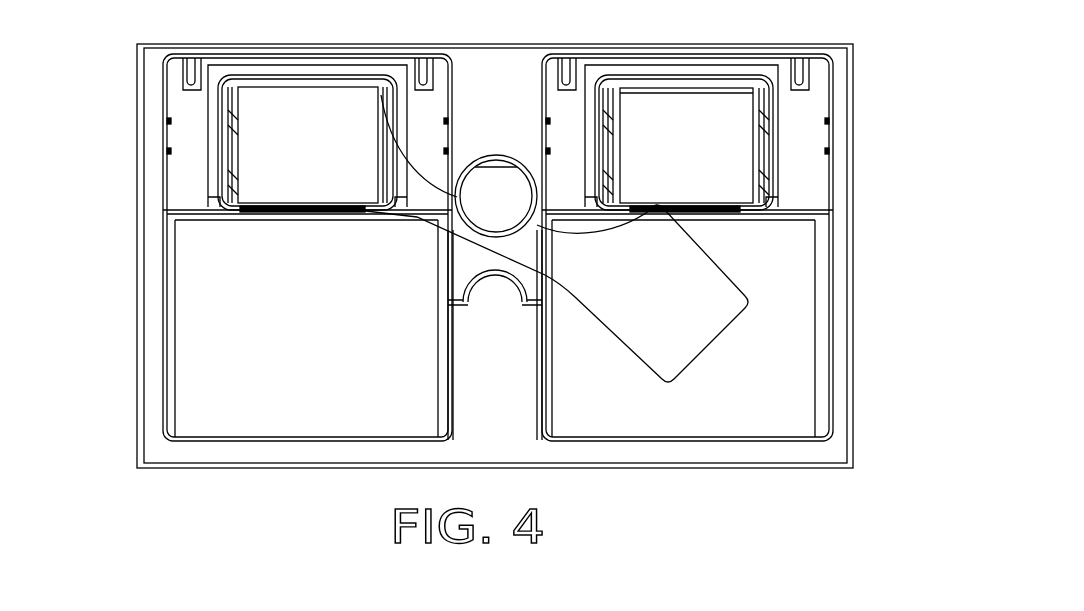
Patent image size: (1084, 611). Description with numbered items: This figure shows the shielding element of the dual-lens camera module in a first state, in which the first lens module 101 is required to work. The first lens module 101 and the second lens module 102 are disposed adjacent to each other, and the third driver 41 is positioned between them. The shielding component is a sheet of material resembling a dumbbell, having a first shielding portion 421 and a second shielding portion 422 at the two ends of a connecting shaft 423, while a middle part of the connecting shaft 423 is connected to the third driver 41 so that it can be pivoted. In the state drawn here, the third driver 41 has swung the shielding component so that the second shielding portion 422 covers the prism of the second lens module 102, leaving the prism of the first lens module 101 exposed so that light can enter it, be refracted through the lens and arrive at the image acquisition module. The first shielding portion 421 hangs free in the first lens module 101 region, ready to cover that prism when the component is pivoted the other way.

The first lens module 101 is at (798, 328).
The second lens module 102 is at (187, 337).
The third driver 41 is at (497, 183).
The first shielding portion 421 is at (675, 282).
The second shielding portion 422 is at (315, 93).
The connecting shaft 423 is at (528, 243).